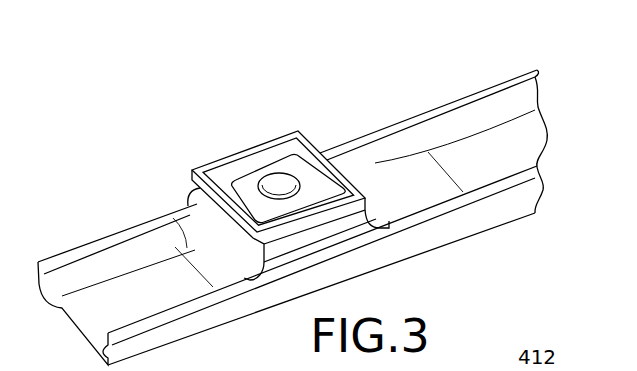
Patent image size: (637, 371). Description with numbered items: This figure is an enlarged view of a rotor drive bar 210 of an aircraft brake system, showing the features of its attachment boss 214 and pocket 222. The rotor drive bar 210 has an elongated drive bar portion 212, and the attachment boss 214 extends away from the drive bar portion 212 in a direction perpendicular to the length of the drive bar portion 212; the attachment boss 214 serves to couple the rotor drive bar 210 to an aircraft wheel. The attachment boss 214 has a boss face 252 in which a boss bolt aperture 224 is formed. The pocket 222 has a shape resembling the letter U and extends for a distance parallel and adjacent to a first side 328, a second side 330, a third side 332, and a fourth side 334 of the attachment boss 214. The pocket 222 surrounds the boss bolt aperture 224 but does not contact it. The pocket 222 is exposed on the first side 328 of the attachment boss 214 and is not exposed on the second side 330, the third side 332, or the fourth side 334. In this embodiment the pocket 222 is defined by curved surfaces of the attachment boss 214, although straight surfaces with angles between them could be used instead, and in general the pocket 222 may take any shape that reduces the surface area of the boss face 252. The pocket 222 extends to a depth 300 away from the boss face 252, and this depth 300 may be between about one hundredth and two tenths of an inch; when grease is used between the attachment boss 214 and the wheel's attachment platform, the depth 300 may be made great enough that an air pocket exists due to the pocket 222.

The rotor drive bar 210 is at (420, 115).
The drive bar portion 212 is at (528, 72).
The attachment boss 214 is at (348, 222).
The pocket 222 is at (221, 186).
The boss bolt aperture 224 is at (283, 190).
The boss face 252 is at (299, 174).
The depth 300 is at (218, 170).
The first side 328 is at (66, 308).
The second side 330 is at (322, 233).
The third side 332 is at (366, 197).
The fourth side 334 is at (281, 131).